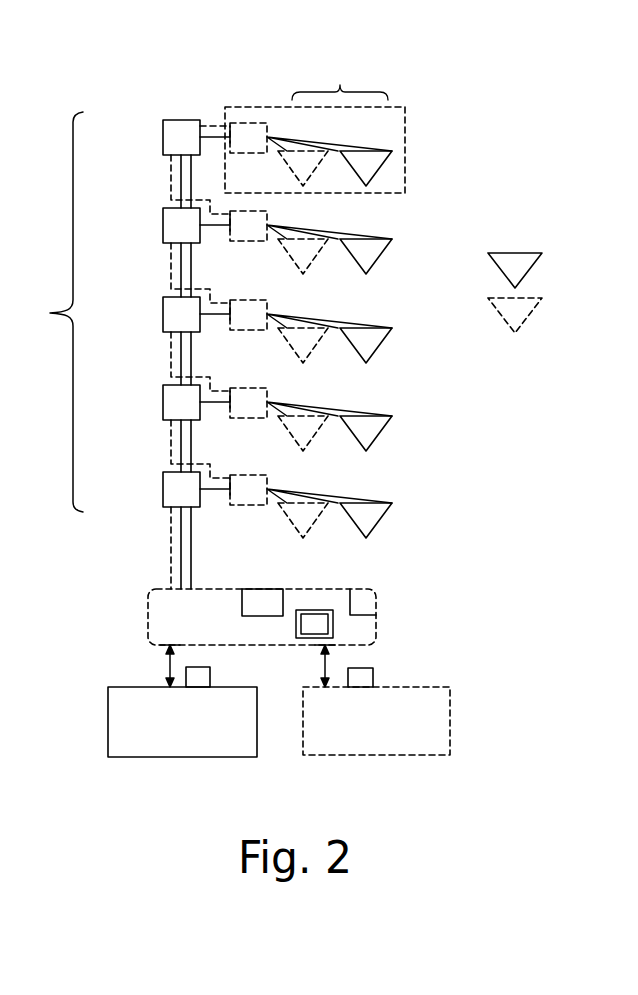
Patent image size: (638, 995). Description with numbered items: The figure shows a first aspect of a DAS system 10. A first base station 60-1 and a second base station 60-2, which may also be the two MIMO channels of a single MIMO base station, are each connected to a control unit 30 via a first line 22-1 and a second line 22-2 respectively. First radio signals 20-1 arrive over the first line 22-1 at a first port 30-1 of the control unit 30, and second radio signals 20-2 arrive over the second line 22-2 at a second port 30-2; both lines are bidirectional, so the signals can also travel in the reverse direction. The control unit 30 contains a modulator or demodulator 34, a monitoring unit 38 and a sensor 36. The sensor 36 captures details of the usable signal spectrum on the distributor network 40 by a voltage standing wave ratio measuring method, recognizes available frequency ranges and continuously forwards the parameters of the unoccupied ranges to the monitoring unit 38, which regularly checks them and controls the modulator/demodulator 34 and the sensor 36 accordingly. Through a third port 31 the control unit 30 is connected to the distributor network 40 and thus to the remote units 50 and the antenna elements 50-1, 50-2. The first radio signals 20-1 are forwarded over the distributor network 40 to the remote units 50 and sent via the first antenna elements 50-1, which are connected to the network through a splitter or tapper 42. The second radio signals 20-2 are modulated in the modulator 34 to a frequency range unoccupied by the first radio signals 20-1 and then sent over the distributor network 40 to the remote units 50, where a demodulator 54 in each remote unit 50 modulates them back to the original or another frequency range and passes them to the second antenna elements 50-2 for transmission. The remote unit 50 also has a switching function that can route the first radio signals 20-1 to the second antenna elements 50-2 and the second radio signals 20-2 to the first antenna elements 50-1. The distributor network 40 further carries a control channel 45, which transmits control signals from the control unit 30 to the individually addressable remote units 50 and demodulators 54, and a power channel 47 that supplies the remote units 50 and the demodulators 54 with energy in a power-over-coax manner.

The DAS system 10 is at (540, 117).
The first radio signals 20-1 is at (226, 667).
The second radio signals 20-2 is at (390, 674).
The first line 22-1 is at (168, 665).
The second line 22-2 is at (330, 660).
The control unit 30 is at (375, 590).
The first port 30-1 is at (166, 645).
The second port 30-2 is at (330, 646).
The third port 31 is at (186, 587).
The modulator or demodulator 34 is at (314, 624).
The sensor 36 is at (368, 603).
The monitoring unit 38 is at (268, 597).
The distributor network 40 is at (50, 312).
The splitter or tapper 42 is at (172, 222).
The control channel 45 is at (171, 547).
The power channel 47 is at (192, 447).
The remote units 50 is at (315, 280).
The first antenna elements 50-1 is at (478, 344).
The second antenna elements 50-2 is at (447, 344).
The demodulator 54 is at (255, 110).
The first base station 60-1 is at (190, 757).
The second base station 60-2 is at (378, 755).